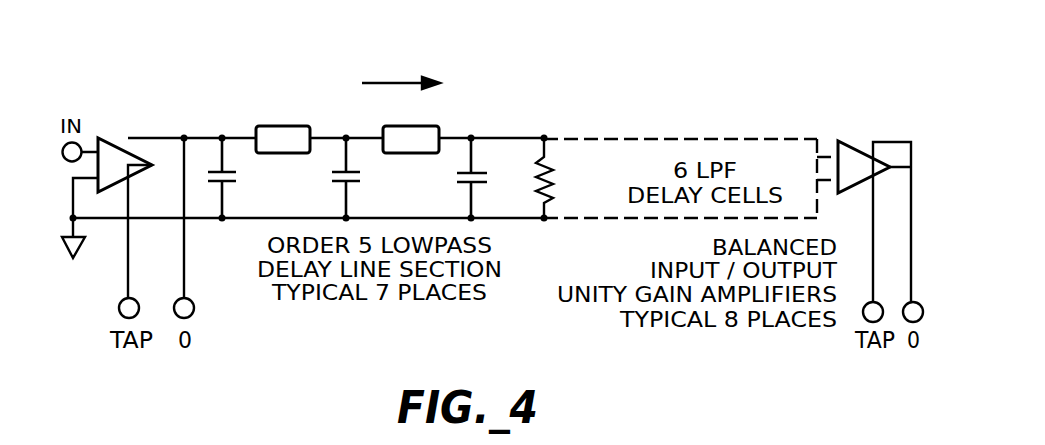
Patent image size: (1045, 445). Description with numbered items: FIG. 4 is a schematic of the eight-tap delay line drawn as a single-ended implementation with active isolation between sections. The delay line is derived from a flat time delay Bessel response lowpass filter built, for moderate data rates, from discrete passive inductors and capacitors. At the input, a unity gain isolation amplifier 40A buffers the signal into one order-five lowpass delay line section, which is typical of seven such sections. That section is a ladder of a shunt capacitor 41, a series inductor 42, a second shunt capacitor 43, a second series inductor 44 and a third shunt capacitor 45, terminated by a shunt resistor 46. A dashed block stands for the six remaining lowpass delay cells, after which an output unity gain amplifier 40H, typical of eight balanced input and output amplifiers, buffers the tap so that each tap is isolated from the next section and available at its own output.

The input unity gain amplifier 40A is at (105, 138).
The shunt capacitor 41 is at (230, 182).
The series inductor 42 is at (290, 126).
The shunt capacitor 43 is at (352, 182).
The series inductor 44 is at (420, 126).
The shunt capacitor 45 is at (477, 183).
The termination resistor 46 is at (551, 180).
The output unity gain amplifier 40H is at (838, 142).